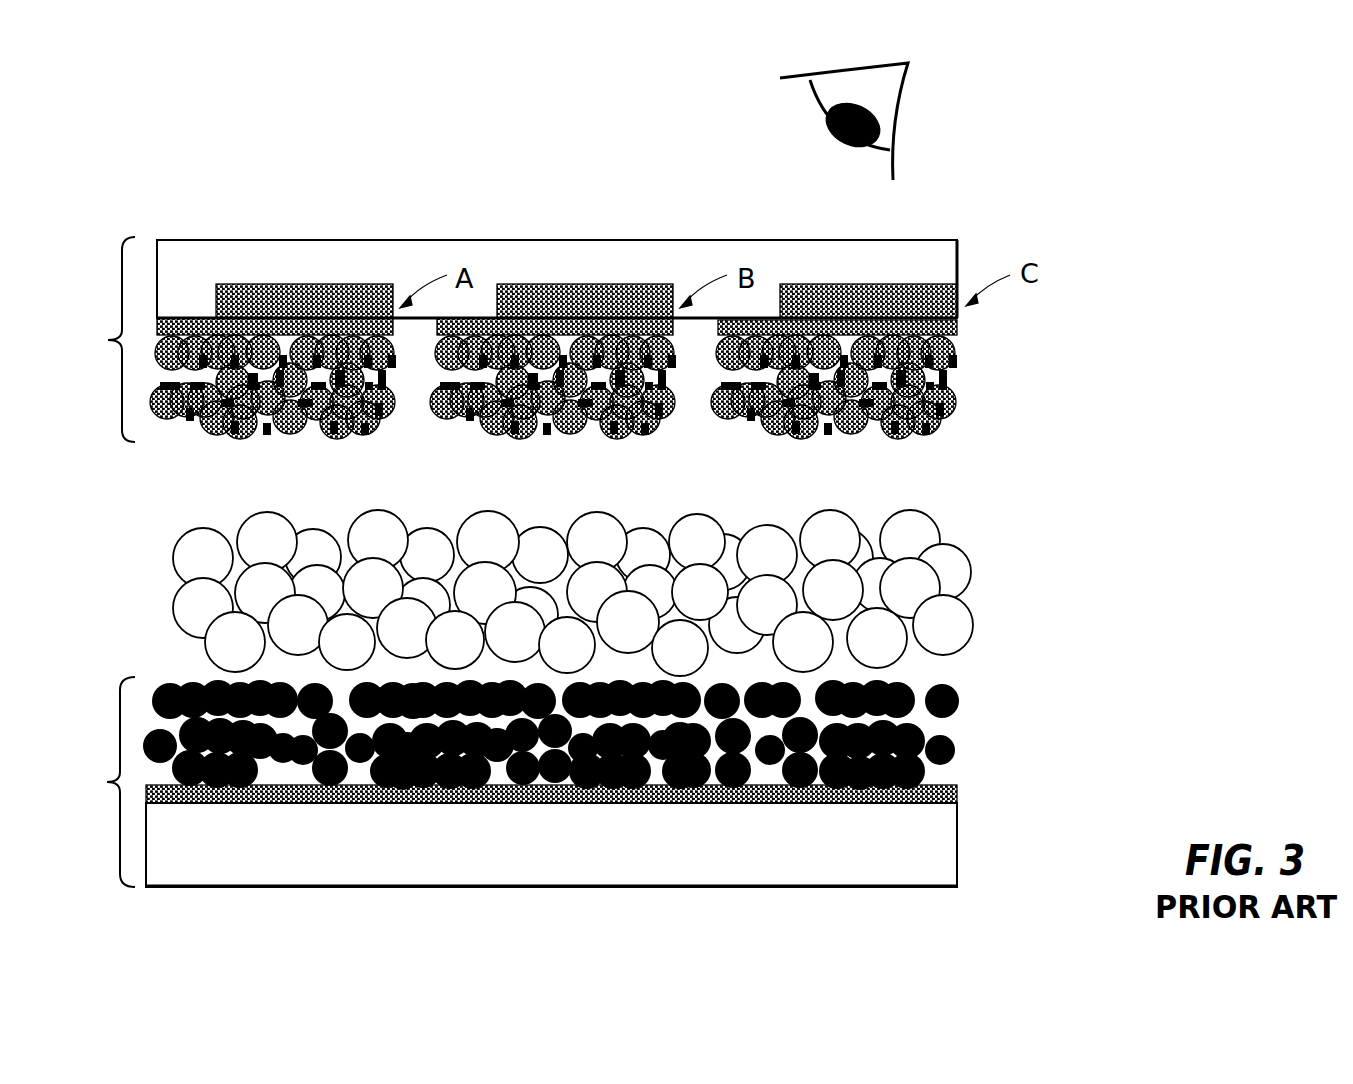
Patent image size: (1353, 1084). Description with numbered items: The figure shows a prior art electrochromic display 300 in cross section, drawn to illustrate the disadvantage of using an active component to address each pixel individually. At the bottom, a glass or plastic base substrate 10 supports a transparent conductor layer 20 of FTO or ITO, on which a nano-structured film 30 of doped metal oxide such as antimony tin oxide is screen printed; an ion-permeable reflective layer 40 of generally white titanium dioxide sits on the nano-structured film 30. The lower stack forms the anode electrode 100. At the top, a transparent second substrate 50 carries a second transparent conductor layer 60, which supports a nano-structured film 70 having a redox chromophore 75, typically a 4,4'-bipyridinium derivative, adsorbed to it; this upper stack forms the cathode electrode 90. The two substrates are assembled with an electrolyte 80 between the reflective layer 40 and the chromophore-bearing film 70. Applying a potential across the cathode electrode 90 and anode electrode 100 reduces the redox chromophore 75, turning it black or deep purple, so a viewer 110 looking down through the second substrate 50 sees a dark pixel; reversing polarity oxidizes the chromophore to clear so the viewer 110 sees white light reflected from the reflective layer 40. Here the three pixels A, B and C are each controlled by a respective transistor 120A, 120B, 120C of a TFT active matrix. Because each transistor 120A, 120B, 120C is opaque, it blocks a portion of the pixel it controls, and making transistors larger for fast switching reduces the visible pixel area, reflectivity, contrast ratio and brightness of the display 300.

The base substrate 10 is at (958, 843).
The transparent conductor layer 20 is at (958, 793).
The nano-structured film 30 is at (955, 732).
The ion-permeable reflective layer 40 is at (977, 570).
The second substrate 50 is at (958, 262).
The transparent conductor layer 60 is at (957, 325).
The nano-structured film 70 is at (947, 387).
The redox chromophore 75 is at (940, 420).
The electrolyte 80 is at (750, 480).
The cathode electrode 90 is at (104, 339).
The anode electrode 100 is at (96, 782).
The viewer 110 is at (900, 92).
The transistor 120A is at (307, 283).
The transistor 120B is at (595, 283).
The transistor 120C is at (887, 283).
The electrochromic display 300 is at (684, 894).